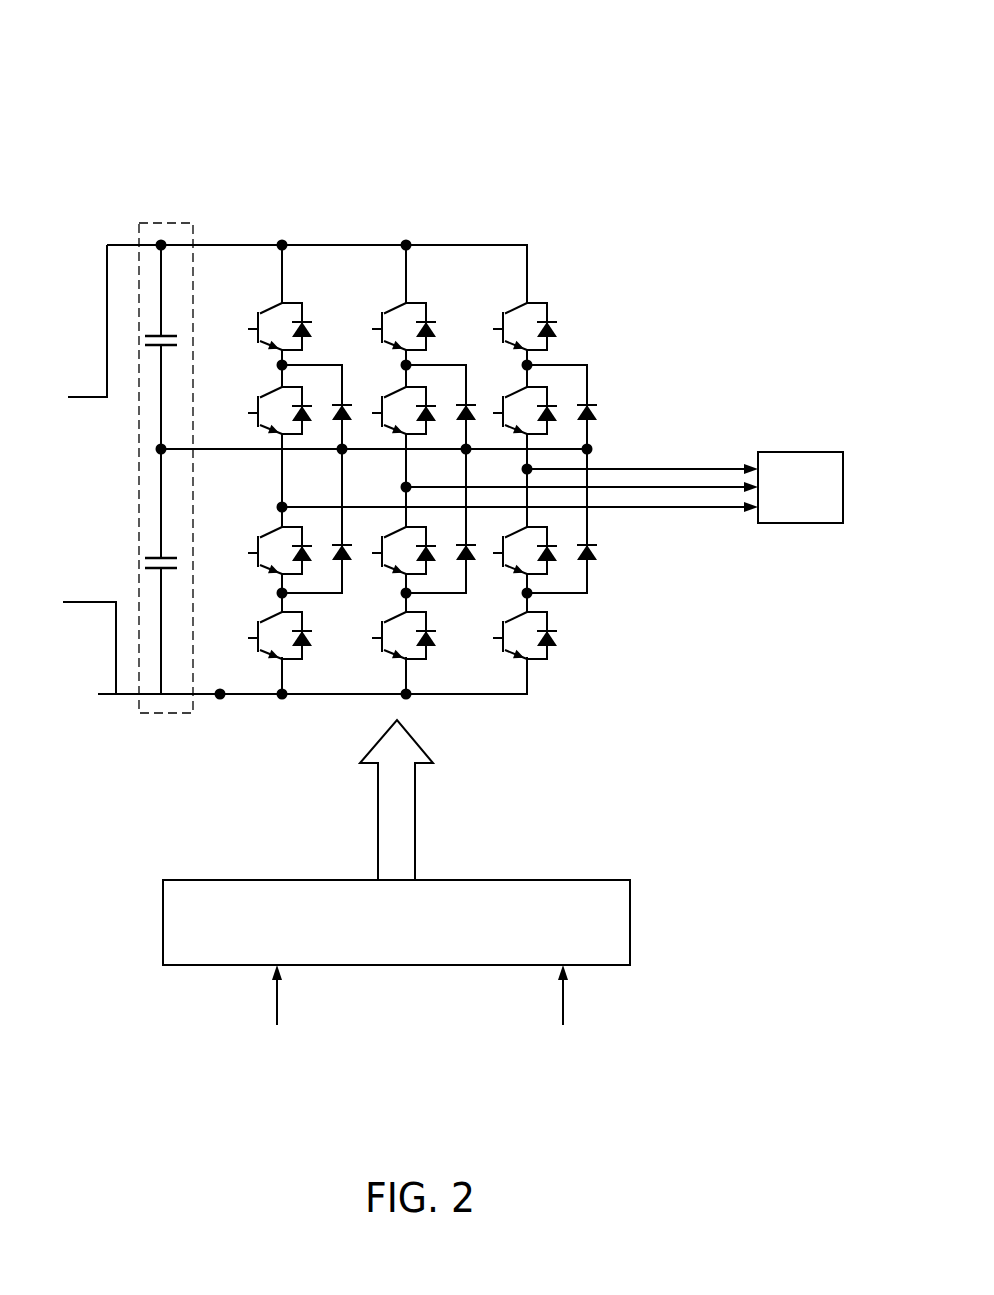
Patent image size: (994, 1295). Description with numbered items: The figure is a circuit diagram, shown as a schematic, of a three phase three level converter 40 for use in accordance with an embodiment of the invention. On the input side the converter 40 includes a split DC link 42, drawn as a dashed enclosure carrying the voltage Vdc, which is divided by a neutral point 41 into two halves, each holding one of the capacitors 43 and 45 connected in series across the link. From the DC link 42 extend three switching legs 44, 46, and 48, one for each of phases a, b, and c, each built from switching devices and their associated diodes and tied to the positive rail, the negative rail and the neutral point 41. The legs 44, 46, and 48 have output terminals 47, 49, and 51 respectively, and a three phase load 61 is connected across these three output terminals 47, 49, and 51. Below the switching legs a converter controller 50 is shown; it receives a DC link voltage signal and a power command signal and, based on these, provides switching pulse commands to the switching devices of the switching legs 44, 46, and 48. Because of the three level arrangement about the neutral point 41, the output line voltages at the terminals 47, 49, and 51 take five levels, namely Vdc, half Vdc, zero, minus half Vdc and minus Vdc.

The three phase three level converter 40 is at (667, 60).
The neutral point 41 is at (158, 447).
The split DC link 42 is at (167, 223).
The capacitor 43 is at (157, 335).
The switching leg 44 is at (283, 265).
The capacitor 45 is at (150, 560).
The switching leg 46 is at (407, 267).
The output terminal 47 is at (682, 468).
The switching leg 48 is at (527, 267).
The output terminal 49 is at (645, 489).
The converter controller 50 is at (630, 918).
The output terminal 51 is at (688, 509).
The three phase load 61 is at (802, 452).